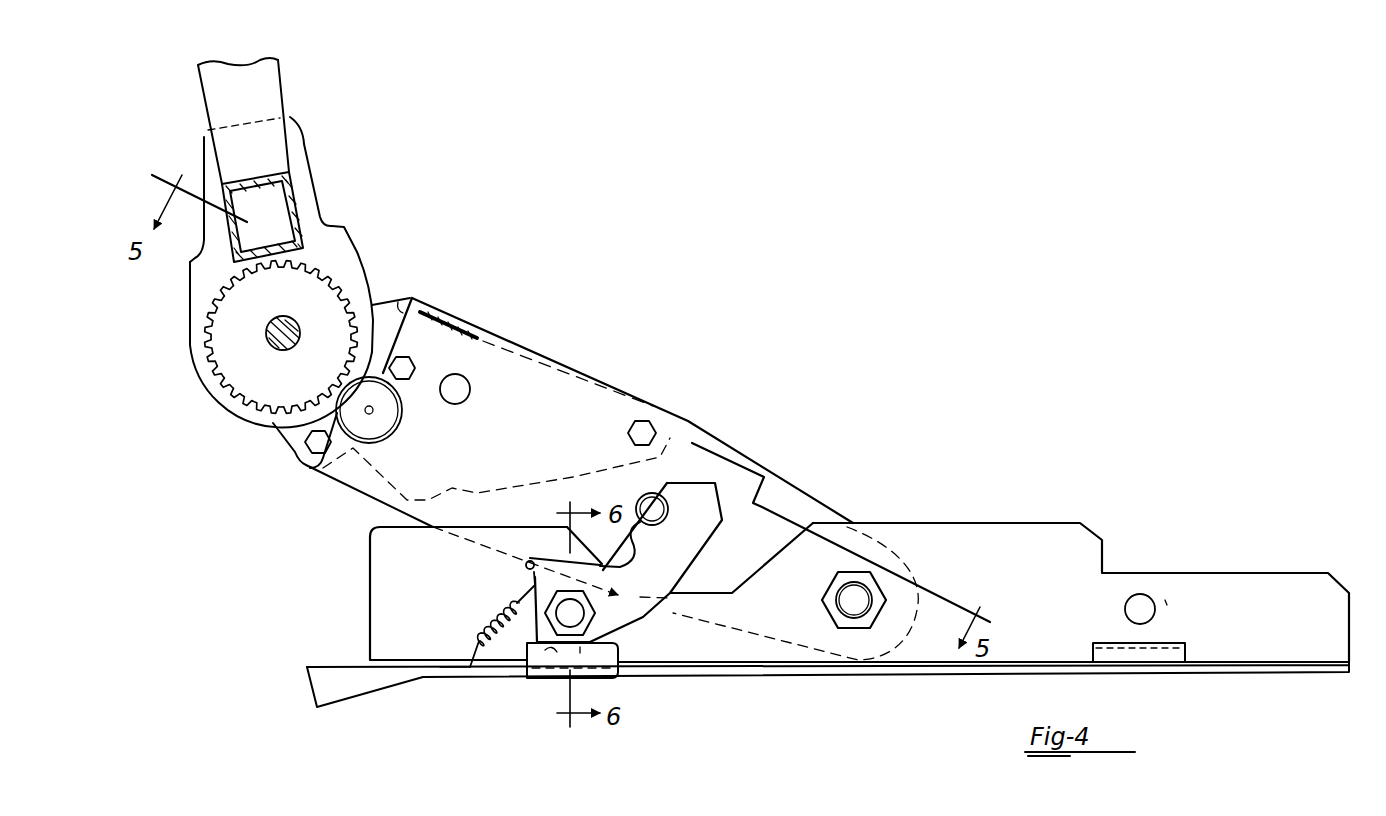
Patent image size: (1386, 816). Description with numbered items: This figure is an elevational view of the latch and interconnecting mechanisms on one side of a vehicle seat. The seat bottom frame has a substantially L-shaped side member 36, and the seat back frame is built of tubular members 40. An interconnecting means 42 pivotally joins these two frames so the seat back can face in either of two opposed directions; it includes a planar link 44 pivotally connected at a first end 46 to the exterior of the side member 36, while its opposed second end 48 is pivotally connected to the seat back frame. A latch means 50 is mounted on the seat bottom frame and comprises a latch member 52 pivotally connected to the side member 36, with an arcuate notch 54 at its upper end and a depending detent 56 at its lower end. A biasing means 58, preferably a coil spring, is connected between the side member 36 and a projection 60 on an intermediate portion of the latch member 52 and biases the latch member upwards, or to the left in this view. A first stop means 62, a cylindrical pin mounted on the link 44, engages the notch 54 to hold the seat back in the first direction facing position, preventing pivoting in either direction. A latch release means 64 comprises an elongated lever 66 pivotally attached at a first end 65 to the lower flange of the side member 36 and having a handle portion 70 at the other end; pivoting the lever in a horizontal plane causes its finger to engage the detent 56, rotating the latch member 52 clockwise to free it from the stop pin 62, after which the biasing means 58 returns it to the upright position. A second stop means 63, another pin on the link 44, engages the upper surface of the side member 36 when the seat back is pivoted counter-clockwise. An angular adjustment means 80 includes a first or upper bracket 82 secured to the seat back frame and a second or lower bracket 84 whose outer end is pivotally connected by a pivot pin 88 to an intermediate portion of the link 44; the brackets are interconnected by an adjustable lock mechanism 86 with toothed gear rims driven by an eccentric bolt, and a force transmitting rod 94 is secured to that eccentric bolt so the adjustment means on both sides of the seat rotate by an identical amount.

The side member 36 is at (1068, 507).
The tubular member 40 is at (274, 92).
The interconnecting means 42 is at (630, 323).
The planar link 44 is at (768, 489).
The first end 46 is at (919, 565).
The second end 48 is at (398, 302).
The latch means 50 is at (640, 640).
The latch member 52 is at (641, 617).
The arcuate notch 54 is at (663, 514).
The detent 56 is at (543, 653).
The biasing means 58 is at (493, 603).
The projection 60 is at (534, 562).
The first stop means 62 is at (644, 496).
The second stop means 63 is at (470, 389).
The latch release means 64 is at (341, 708).
The first end 65 is at (605, 679).
The elongated lever 66 is at (457, 678).
The handle portion 70 is at (387, 690).
The angular adjustment means 80 is at (170, 396).
The first bracket member 82 is at (303, 152).
The second bracket member 84 is at (374, 295).
The adjustable lock mechanism 86 is at (250, 376).
The pivot pin 88 is at (656, 430).
The force transmitting rod 94 is at (267, 322).